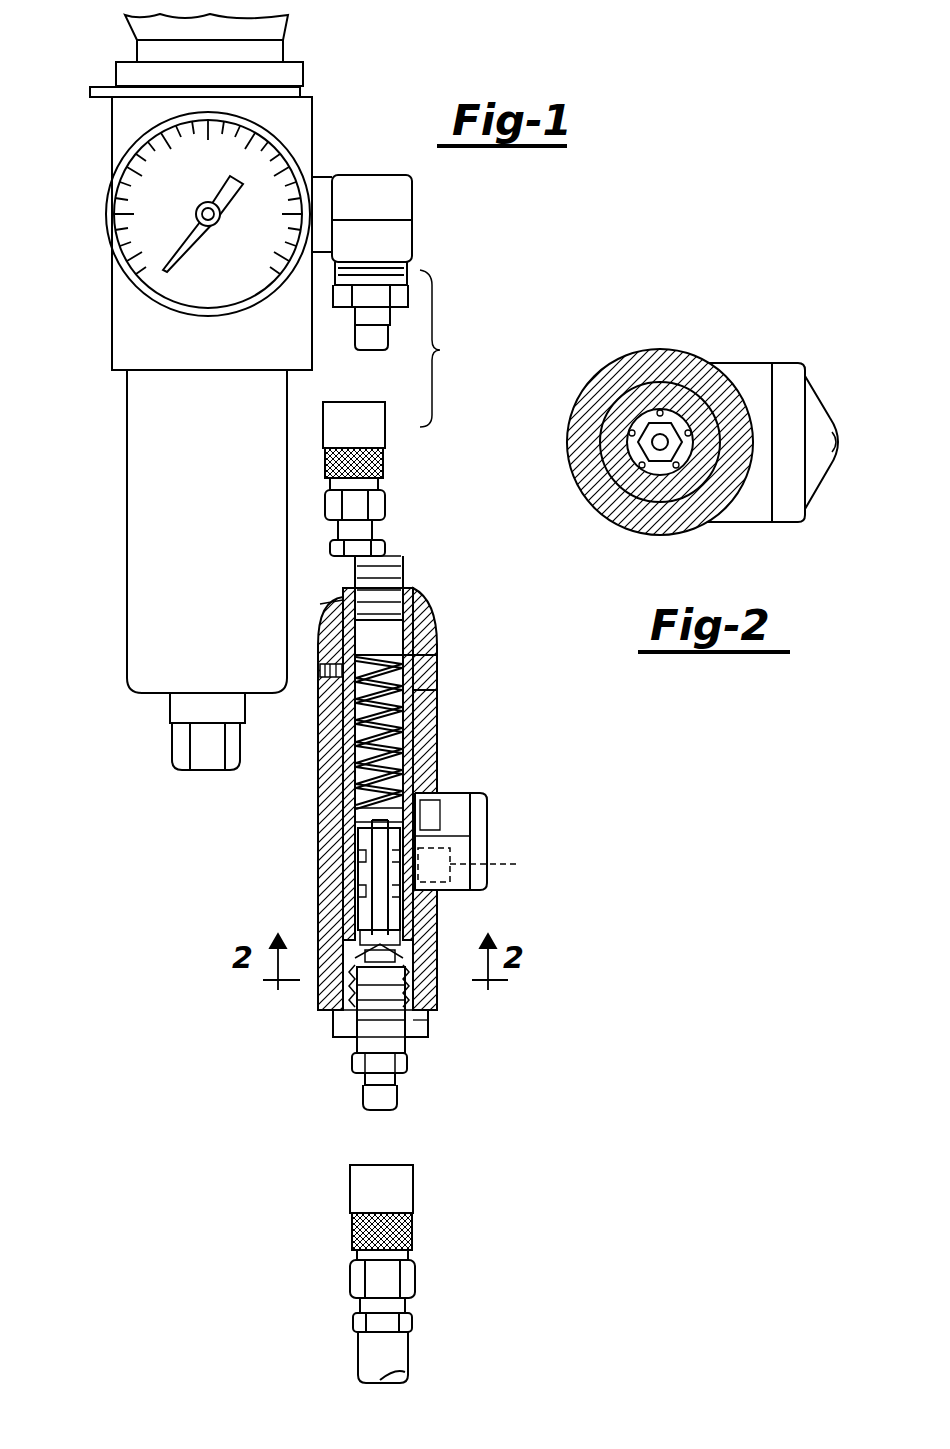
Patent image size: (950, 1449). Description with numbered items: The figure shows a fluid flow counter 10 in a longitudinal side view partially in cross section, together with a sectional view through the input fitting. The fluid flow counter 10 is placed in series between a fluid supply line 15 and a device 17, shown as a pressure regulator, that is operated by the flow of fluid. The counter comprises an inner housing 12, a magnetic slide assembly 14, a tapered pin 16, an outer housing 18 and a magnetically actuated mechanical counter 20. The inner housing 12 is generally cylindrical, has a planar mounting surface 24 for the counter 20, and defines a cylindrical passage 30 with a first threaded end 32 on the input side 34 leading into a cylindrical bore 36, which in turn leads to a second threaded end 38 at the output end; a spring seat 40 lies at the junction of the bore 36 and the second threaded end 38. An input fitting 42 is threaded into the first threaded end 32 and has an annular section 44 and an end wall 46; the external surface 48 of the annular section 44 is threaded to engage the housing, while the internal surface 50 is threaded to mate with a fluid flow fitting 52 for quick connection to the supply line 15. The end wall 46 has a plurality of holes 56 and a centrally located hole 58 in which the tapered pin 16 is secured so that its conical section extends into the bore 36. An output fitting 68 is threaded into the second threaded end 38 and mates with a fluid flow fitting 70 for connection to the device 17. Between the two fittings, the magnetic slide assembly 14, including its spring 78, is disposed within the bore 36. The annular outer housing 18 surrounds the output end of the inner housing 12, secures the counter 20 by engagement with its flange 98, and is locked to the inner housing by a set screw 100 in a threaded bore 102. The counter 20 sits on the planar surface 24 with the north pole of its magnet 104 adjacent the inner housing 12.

In FIG. 1, the fluid flow counter 10 is at (520, 743).
In FIG. 1, the inner housing 12 is at (418, 592).
In FIG. 1, the magnetic slide assembly 14 is at (356, 874).
In FIG. 1, the fluid supply line 15 is at (398, 1353).
In FIG. 1, the tapered pin 16 is at (378, 899).
In FIG. 1, the device 17 is at (125, 297).
In FIG. 1, the outer housing 18 is at (430, 616).
In FIG. 1, the magnetic counter 20 is at (488, 812).
In FIG. 1, the planar mounting surface 24 is at (462, 858).
In FIG. 1, the cylindrical passage 30 is at (398, 673).
In FIG. 1, the first threaded end 32 is at (432, 1012).
In FIG. 1, the input side 34 is at (340, 1026).
In FIG. 1, the cylindrical bore 36 is at (412, 905).
In FIG. 1, the second threaded end 38 is at (403, 582).
In FIG. 1, the spring seat 40 is at (392, 658).
In FIG. 1, the input fitting 42 is at (426, 1040).
In FIG. 2, the input fitting 42 is at (690, 400).
In FIG. 1, the annular section 44 is at (432, 985).
In FIG. 1, the end wall 46 is at (408, 935).
In FIG. 2, the end wall 46 is at (655, 470).
In FIG. 1, the external surface 48 is at (355, 995).
In FIG. 1, the internal surface 50 is at (358, 1043).
In FIG. 1, the fluid flow fitting 52 is at (398, 1096).
In FIG. 2, the holes 56 is at (660, 412).
In FIG. 2, the centrally located hole 58 is at (655, 442).
In FIG. 1, the output fitting 68 is at (400, 553).
In FIG. 1, the fluid flow fitting 70 is at (385, 437).
In FIG. 1, the spring 78 is at (412, 723).
In FIG. 1, the flange 98 is at (432, 800).
In FIG. 1, the set screw 100 is at (322, 678).
In FIG. 1, the threaded bore 102 is at (320, 604).
In FIG. 1, the magnet 104 is at (455, 866).